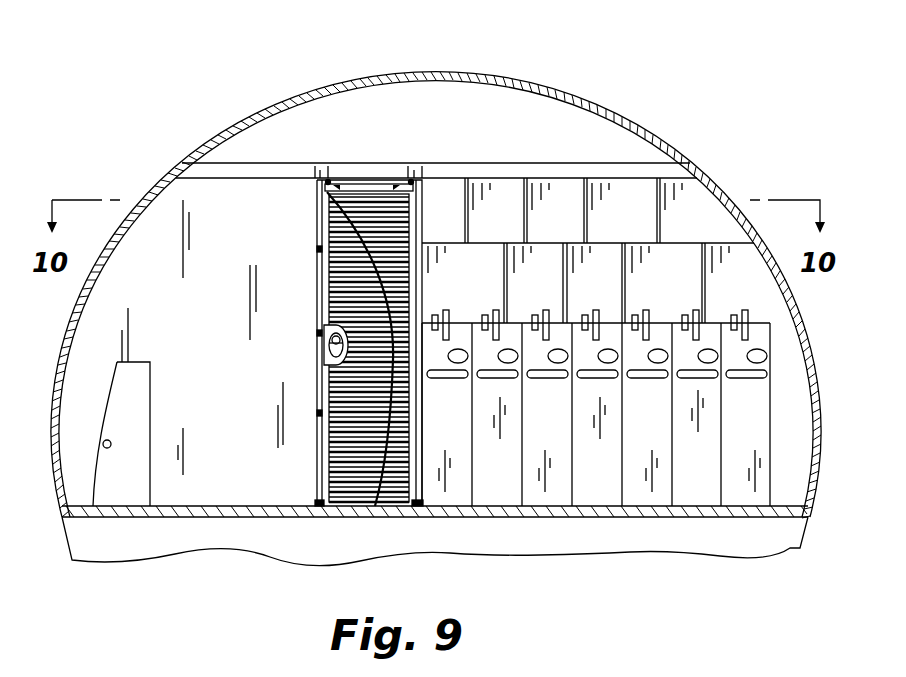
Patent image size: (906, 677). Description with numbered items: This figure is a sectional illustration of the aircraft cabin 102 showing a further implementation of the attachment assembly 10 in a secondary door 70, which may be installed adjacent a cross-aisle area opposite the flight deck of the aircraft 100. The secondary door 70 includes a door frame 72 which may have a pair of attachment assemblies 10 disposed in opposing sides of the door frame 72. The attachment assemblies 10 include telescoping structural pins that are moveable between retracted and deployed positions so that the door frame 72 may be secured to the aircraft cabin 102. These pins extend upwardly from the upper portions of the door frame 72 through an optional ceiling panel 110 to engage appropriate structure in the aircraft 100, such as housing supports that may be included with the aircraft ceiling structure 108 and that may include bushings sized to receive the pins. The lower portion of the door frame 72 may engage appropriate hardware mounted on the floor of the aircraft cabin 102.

The aircraft 100 is at (157, 68).
The aircraft cabin 102 is at (245, 480).
The aircraft ceiling structure 108 is at (275, 163).
The ceiling panel 110 is at (472, 163).
The door frame 72 is at (304, 185).
The attachment assembly 10 is at (411, 182).
The secondary door 70 is at (358, 468).